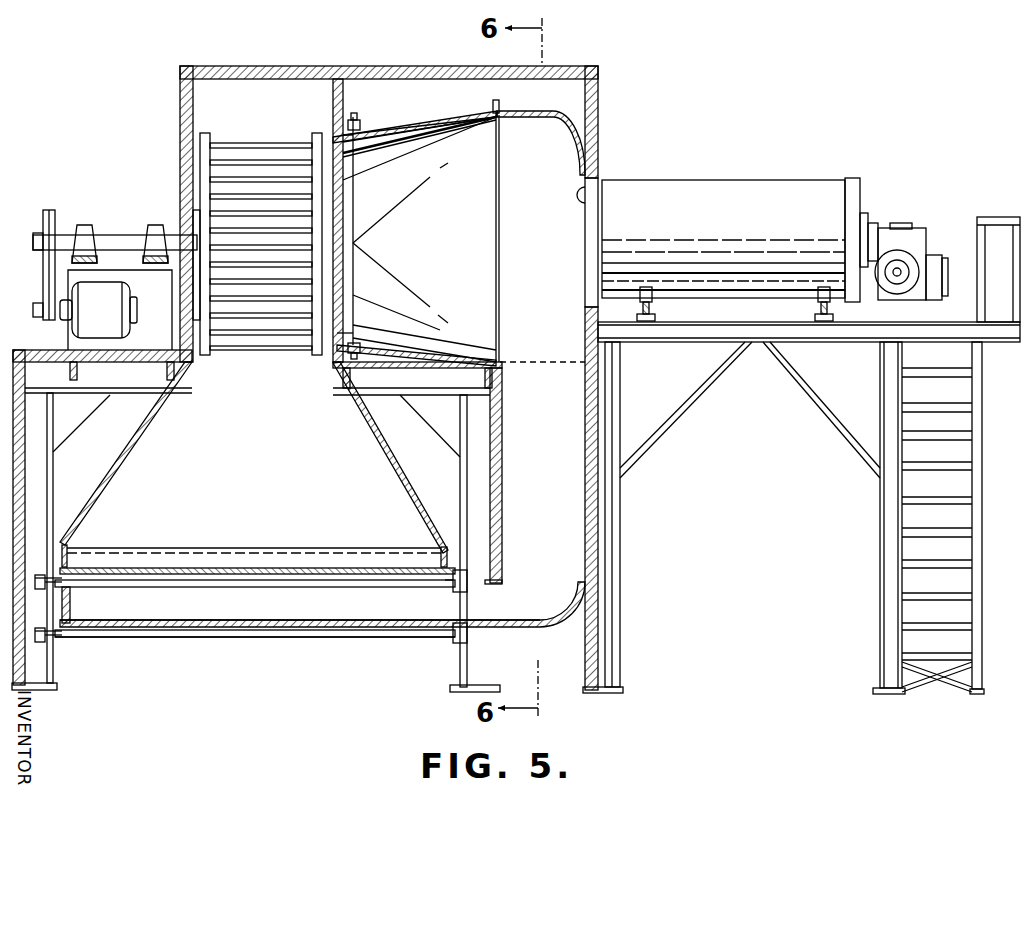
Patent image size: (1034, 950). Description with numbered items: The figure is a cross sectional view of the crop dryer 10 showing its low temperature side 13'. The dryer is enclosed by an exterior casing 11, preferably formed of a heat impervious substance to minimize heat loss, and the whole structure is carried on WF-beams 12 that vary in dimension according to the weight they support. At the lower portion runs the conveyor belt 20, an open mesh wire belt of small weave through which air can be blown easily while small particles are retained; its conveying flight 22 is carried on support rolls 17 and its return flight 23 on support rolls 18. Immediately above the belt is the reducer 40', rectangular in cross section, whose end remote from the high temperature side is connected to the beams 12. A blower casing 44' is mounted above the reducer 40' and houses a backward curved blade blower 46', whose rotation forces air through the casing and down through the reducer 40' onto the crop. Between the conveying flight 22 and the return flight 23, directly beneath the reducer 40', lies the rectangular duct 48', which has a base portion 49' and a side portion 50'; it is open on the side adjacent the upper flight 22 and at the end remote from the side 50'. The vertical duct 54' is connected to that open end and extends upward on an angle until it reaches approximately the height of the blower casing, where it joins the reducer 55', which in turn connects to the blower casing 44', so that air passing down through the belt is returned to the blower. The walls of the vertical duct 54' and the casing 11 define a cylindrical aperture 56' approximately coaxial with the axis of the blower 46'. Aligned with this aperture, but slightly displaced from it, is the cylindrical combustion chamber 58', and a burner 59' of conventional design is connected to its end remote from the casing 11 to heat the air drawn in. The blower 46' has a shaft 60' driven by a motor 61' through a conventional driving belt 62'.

The crop dryer 10 is at (698, 134).
The exterior casing 11 is at (188, 67).
The WF-beams 12 is at (40, 493).
The low temperature side 13' is at (571, 143).
The support rolls 17 is at (133, 584).
The support rolls 18 is at (168, 634).
The conveyor belt 20 is at (220, 568).
The conveying flight 22 is at (297, 560).
The return flight 23 is at (253, 631).
The reducer 40' is at (254, 457).
The blower casing 44' is at (389, 52).
The blower 46' is at (261, 228).
The rectangular duct 48' is at (180, 642).
The base portion 49' is at (375, 641).
The side portion 50' is at (90, 605).
The vertical duct 54' is at (360, 498).
The reducer 55' is at (415, 117).
The cylindrical aperture 56' is at (611, 199).
The cylindrical combustion chamber 58' is at (731, 229).
The burner 59' is at (906, 248).
The shaft 60' is at (115, 232).
The motor 61' is at (116, 310).
The driving belt 62' is at (27, 265).